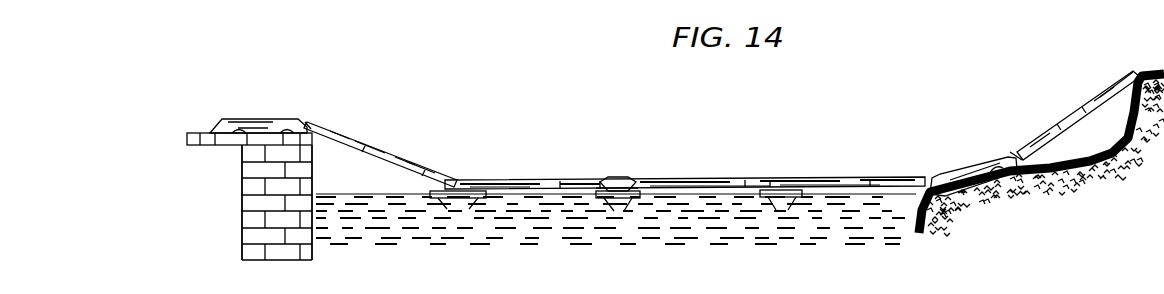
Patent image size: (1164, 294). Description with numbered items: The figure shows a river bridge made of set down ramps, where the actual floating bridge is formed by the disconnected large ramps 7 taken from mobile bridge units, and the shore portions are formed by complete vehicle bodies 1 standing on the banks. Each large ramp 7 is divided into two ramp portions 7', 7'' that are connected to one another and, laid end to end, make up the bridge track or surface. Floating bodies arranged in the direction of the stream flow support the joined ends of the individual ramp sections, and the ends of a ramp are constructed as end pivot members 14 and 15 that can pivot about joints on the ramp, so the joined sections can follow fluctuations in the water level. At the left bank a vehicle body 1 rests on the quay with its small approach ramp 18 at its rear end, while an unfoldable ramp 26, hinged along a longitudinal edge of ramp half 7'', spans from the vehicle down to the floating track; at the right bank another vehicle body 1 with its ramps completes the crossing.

The vehicle body 1 is at (266, 118).
The large ramp 7 is at (616, 209).
The ramp portion 7' is at (769, 123).
The ramp portion 7'' is at (706, 138).
The end pivot member 14 is at (605, 180).
The end pivot member 15 is at (628, 178).
The small approach ramp 18 is at (212, 132).
The unfoldable ramp 26 is at (332, 126).